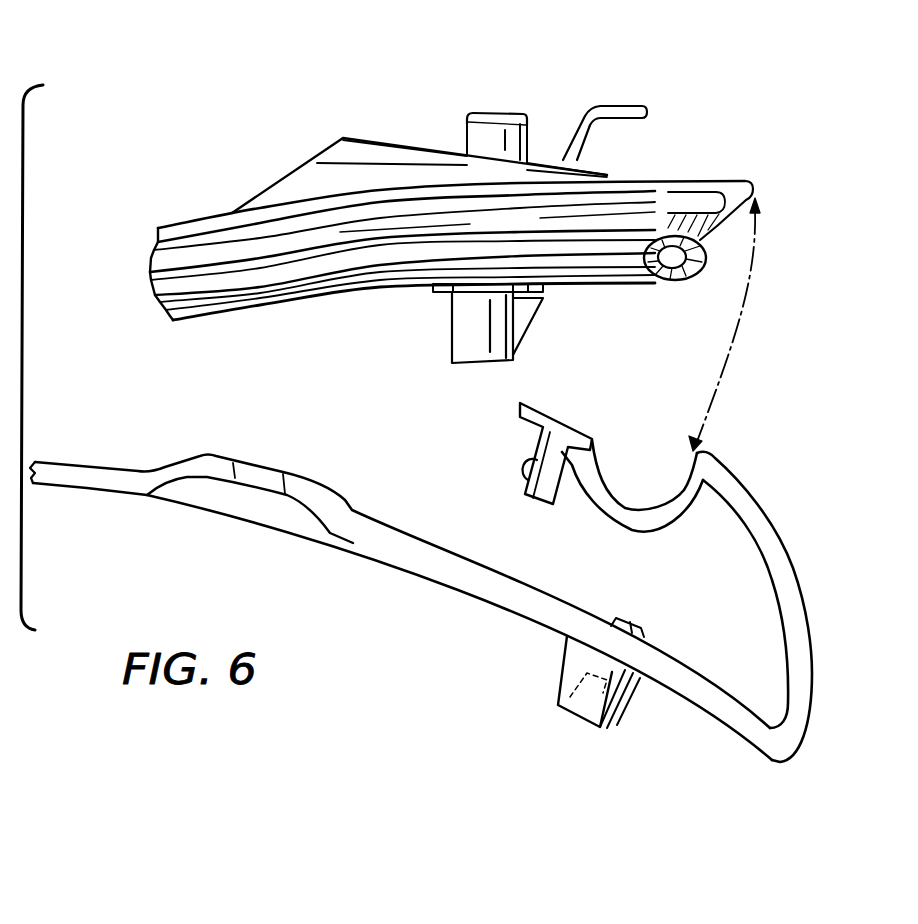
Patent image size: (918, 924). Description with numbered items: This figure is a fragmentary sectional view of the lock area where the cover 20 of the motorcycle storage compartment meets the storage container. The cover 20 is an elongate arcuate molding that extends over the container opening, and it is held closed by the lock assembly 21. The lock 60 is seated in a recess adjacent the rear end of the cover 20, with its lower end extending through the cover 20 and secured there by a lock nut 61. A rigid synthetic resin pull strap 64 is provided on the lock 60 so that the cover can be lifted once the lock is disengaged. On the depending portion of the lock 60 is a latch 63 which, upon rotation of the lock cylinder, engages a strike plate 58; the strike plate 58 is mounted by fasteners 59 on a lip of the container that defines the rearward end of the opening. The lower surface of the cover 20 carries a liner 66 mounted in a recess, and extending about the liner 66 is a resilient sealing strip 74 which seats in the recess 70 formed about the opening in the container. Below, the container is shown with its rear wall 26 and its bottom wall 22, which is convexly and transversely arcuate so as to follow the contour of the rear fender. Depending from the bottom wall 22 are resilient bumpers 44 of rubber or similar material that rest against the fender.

The cover 20 is at (180, 212).
The lock assembly 21 is at (490, 100).
The lock 60 is at (530, 135).
The pull strap 64 is at (648, 105).
The liner 66 is at (678, 190).
The resilient sealing strip 74 is at (673, 282).
The lock nut 61 is at (433, 292).
The latch 63 is at (537, 308).
The strike plate 58 is at (550, 423).
The fasteners 59 is at (525, 466).
The recess 70 is at (670, 490).
The rear wall 26 is at (793, 555).
The bottom wall 22 is at (456, 585).
The bumpers 44 is at (633, 705).